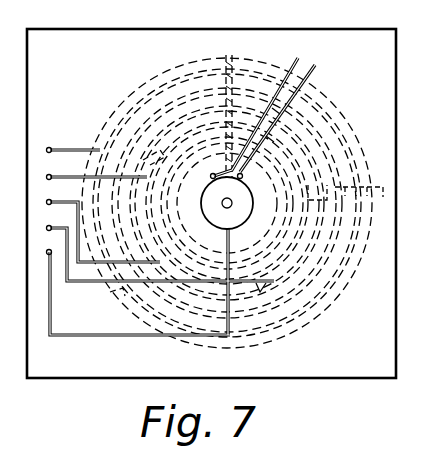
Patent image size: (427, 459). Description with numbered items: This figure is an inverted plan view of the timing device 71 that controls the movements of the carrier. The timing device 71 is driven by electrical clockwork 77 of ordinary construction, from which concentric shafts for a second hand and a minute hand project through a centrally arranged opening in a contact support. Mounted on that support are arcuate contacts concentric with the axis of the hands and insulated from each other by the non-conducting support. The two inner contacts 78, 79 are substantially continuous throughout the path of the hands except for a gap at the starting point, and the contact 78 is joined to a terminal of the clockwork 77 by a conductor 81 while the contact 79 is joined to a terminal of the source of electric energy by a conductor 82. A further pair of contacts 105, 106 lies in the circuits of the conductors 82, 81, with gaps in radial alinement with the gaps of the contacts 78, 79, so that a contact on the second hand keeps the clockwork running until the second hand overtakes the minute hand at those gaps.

The timing device 71 is at (397, 143).
The electrical clockwork 77 is at (212, 218).
The inner contact 78 is at (278, 216).
The inner contact 79 is at (195, 165).
The conductor 81 is at (248, 170).
The conductor 82 is at (316, 66).
The contact 105 is at (333, 136).
The contact 106 is at (352, 198).